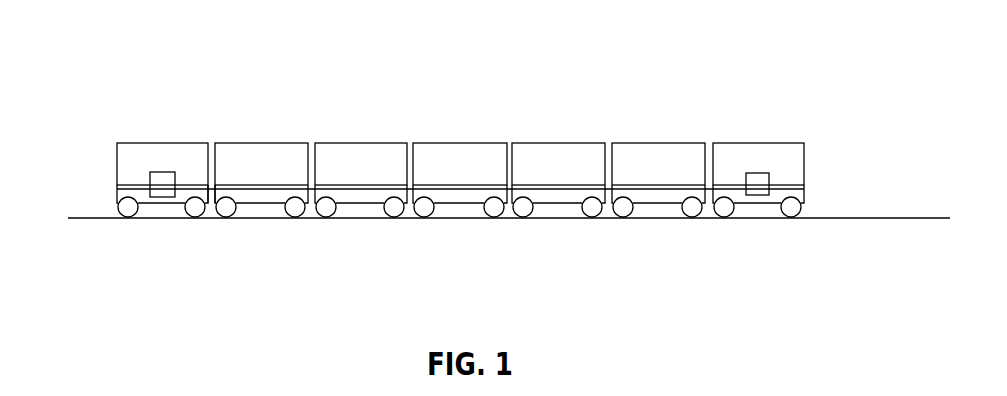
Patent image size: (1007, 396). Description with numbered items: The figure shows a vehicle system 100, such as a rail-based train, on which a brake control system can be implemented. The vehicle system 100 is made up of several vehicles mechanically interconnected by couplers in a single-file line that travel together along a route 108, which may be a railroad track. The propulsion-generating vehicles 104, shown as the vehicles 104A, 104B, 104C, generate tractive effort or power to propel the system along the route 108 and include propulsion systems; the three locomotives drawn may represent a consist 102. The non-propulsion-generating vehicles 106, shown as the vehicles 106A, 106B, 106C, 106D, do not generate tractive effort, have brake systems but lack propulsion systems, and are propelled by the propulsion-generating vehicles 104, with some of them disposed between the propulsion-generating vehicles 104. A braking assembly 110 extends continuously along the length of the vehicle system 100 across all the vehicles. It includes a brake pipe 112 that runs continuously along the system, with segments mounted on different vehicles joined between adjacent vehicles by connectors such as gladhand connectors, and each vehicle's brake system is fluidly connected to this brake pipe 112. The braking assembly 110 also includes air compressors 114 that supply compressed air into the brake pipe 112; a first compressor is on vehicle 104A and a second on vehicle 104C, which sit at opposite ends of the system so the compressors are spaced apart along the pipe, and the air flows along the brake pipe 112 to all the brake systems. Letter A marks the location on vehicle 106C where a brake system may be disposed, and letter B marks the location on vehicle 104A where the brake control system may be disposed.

The vehicle system 100 is at (503, 170).
The consist 102 is at (441, 187).
The propulsion-generating vehicles 104 is at (441, 177).
The propulsion-generating vehicle 104A is at (163, 205).
The propulsion-generating vehicle 104B is at (362, 203).
The propulsion-generating vehicle 104C is at (757, 203).
The non-propulsion-generating vehicles 106 is at (262, 143).
The non-propulsion-generating vehicle 106A is at (263, 205).
The non-propulsion-generating vehicle 106B is at (462, 143).
The non-propulsion-generating vehicle 106C is at (558, 143).
The non-propulsion-generating vehicle 106D is at (658, 203).
The route 108 is at (878, 220).
The braking assembly 110 is at (195, 167).
The brake pipe 112 is at (463, 185).
The air compressor 114 is at (150, 185).
The location A is at (552, 192).
The location B is at (210, 190).